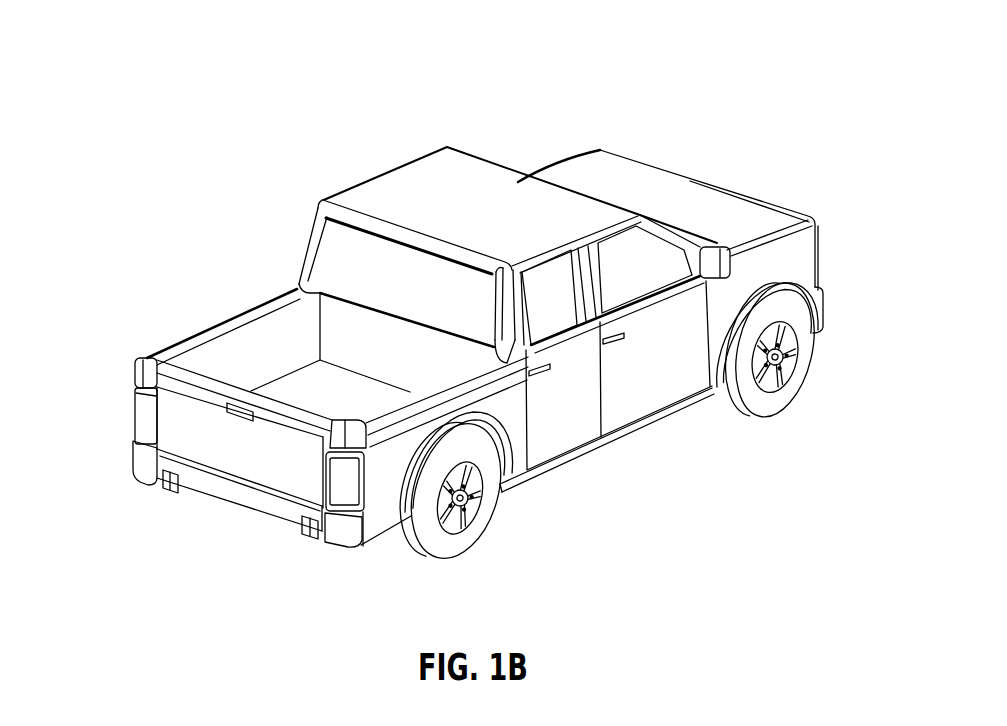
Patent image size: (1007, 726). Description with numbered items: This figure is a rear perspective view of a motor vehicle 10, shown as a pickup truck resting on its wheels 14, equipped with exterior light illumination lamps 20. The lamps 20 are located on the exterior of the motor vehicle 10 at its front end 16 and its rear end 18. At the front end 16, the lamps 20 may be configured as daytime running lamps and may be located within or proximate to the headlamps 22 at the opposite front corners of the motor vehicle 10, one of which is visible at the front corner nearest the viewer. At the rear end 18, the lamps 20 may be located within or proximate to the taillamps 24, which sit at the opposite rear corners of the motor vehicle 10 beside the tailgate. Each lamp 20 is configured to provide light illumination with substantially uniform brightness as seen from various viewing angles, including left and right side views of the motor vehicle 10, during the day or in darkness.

The motor vehicle 10 is at (486, 340).
The wheels 14 is at (768, 403).
The front end 16 is at (823, 288).
The rear end 18 is at (205, 477).
The light illumination lamps 20 is at (353, 483).
The headlamps 22 is at (818, 252).
The taillamps 24 is at (145, 417).